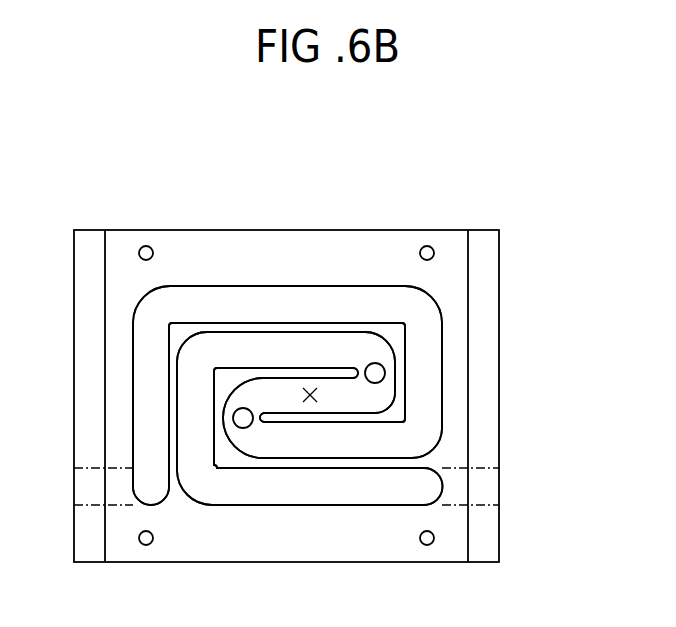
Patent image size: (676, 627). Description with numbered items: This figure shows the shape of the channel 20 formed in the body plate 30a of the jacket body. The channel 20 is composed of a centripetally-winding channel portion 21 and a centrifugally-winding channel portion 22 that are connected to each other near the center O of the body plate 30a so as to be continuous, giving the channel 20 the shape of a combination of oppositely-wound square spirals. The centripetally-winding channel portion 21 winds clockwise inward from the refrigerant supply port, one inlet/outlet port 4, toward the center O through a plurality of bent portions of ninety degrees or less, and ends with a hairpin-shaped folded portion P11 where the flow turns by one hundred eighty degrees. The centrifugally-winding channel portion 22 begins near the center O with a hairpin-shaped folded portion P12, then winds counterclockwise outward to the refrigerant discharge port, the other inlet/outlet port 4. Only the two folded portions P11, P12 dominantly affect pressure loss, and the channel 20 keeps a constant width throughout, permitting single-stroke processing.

The body plate 30a is at (505, 289).
The channel 20 is at (455, 412).
The centripetally-winding channel portion 21 is at (434, 362).
The centrifugally-winding channel portion 22 is at (297, 344).
The inlet/outlet port 4 is at (80, 504).
The hairpin-shaped folded portion P11 is at (238, 428).
The hairpin-shaped folded portion P12 is at (380, 382).
The center O is at (309, 402).